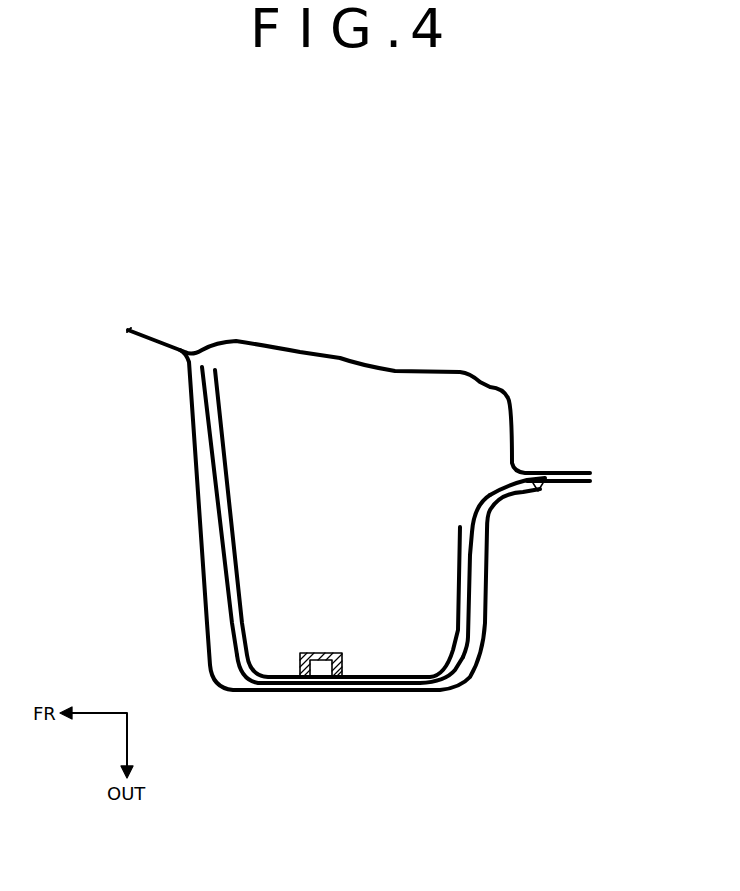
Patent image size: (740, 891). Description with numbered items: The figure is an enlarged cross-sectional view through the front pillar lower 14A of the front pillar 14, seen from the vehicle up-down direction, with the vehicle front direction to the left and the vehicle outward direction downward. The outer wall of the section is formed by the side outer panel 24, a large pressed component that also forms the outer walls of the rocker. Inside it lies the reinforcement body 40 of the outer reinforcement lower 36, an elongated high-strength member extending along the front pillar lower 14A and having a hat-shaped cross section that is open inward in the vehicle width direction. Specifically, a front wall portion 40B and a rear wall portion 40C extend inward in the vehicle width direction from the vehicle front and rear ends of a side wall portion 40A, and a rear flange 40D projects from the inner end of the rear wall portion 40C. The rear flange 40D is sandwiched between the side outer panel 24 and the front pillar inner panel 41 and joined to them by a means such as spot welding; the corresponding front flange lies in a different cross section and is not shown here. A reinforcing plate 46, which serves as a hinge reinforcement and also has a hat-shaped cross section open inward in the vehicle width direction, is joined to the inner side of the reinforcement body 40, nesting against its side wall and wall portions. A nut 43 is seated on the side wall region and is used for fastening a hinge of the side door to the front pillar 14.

The front pillar inner panel 41 is at (360, 360).
The side outer panel 24 is at (483, 657).
The reinforcement body 40 is at (341, 563).
The outer reinforcement lower 36 is at (341, 563).
The side wall portion 40A is at (372, 690).
The front wall portion 40B is at (220, 560).
The rear wall portion 40C is at (468, 602).
The rear flange 40D is at (537, 492).
The reinforcing plate 46 is at (242, 540).
The nut 43 is at (320, 653).
The front pillar lower 14A is at (310, 797).
The front pillar 14 is at (297, 757).